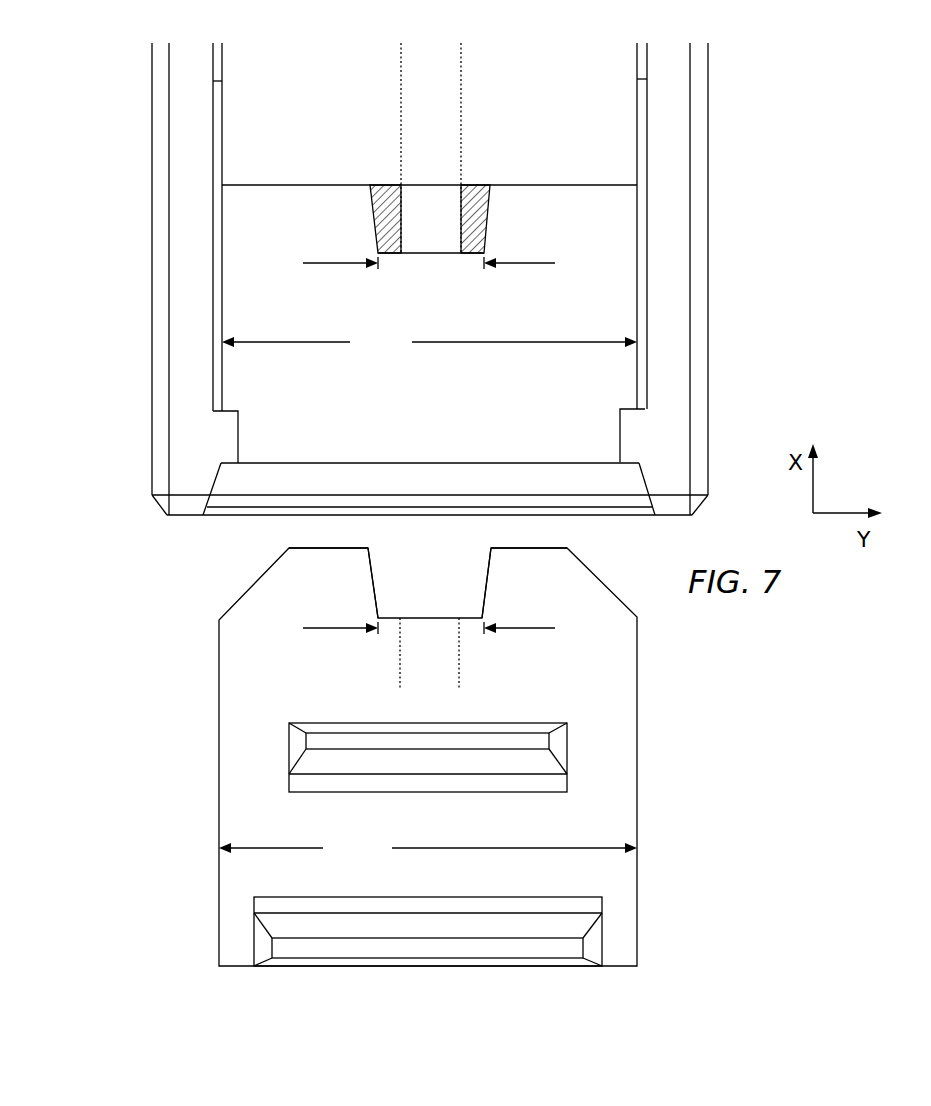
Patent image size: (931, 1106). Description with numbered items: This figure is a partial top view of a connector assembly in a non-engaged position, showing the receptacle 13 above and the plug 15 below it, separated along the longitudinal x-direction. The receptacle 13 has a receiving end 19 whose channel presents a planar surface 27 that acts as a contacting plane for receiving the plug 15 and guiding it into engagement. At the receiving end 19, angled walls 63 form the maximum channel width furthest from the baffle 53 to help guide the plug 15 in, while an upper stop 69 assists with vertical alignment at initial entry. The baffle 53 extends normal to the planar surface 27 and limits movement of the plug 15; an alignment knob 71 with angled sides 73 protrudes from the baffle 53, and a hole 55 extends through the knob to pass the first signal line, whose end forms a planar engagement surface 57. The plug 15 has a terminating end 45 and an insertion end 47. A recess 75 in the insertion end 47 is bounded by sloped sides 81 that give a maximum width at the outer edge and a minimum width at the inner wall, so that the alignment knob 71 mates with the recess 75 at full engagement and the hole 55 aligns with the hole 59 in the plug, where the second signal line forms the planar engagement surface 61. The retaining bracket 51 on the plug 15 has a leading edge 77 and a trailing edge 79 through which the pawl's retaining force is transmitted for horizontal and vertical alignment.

The receptacle 13 is at (749, 250).
The plug 15 is at (716, 773).
The receiving end 19 is at (80, 192).
The planar surface 27 is at (429, 393).
The terminating end 45 is at (795, 800).
The insertion end 47 is at (92, 553).
The retaining bracket 51 is at (567, 740).
The baffle 53 is at (429, 143).
The hole 55 is at (462, 112).
The planar engagement surface 57 is at (562, 185).
The hole 59 is at (398, 652).
The planar engagement surface 61 is at (526, 548).
The angled walls 63 is at (210, 482).
The upper stop 69 is at (238, 425).
The alignment knob 71 is at (478, 185).
The angled sides 73 is at (372, 205).
The recess 75 is at (428, 572).
The leading edge 77 is at (487, 725).
The trailing edge 79 is at (503, 760).
The sloped sides 81 is at (374, 578).